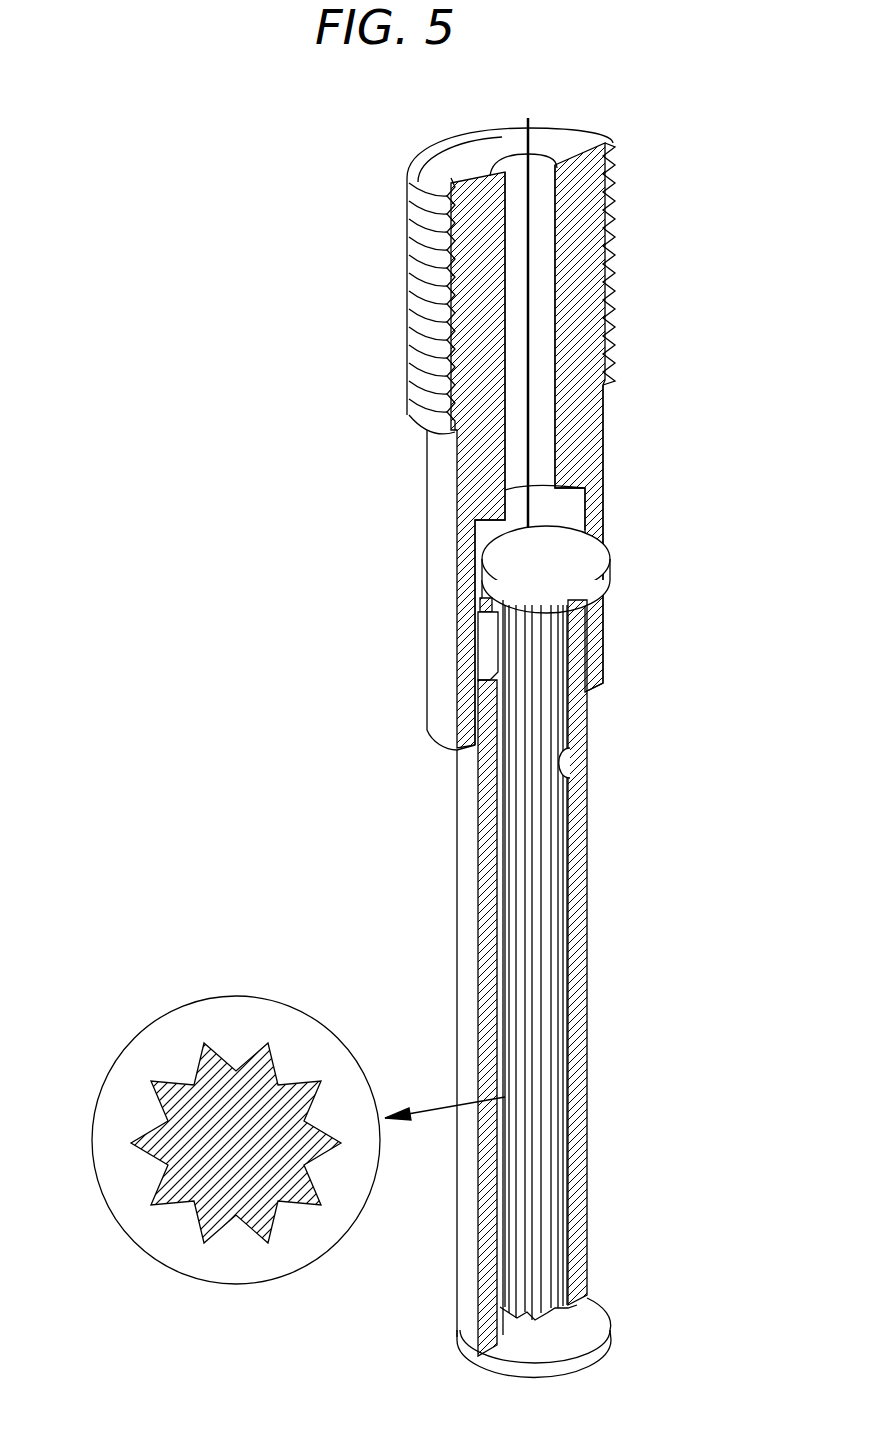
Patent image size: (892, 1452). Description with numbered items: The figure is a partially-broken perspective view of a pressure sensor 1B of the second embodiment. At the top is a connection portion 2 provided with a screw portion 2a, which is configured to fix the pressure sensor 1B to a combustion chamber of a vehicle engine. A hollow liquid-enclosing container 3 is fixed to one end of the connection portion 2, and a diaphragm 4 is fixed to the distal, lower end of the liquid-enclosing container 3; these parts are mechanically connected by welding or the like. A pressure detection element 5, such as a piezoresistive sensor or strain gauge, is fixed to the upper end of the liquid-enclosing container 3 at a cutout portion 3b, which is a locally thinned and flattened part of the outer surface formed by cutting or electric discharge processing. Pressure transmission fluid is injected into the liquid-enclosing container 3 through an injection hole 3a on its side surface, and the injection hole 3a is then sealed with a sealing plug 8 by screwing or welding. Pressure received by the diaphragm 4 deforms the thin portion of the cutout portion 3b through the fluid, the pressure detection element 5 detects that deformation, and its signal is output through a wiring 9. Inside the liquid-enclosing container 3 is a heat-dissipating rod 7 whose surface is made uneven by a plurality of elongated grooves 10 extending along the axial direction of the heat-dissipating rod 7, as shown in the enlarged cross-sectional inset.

The pressure sensor 1B is at (282, 168).
The connection portion 2 is at (603, 412).
The screw portion 2a is at (410, 252).
The liquid-enclosing container 3 is at (457, 905).
The injection hole 3a is at (585, 735).
The cutout portion 3b is at (487, 590).
The diaphragm 4 is at (597, 1330).
The pressure detection element 5 is at (485, 645).
The heat-dissipating rod 7 is at (557, 1106).
The sealing plug 8 is at (587, 762).
The wiring 9 is at (583, 500).
The elongated grooves 10 is at (237, 1053).